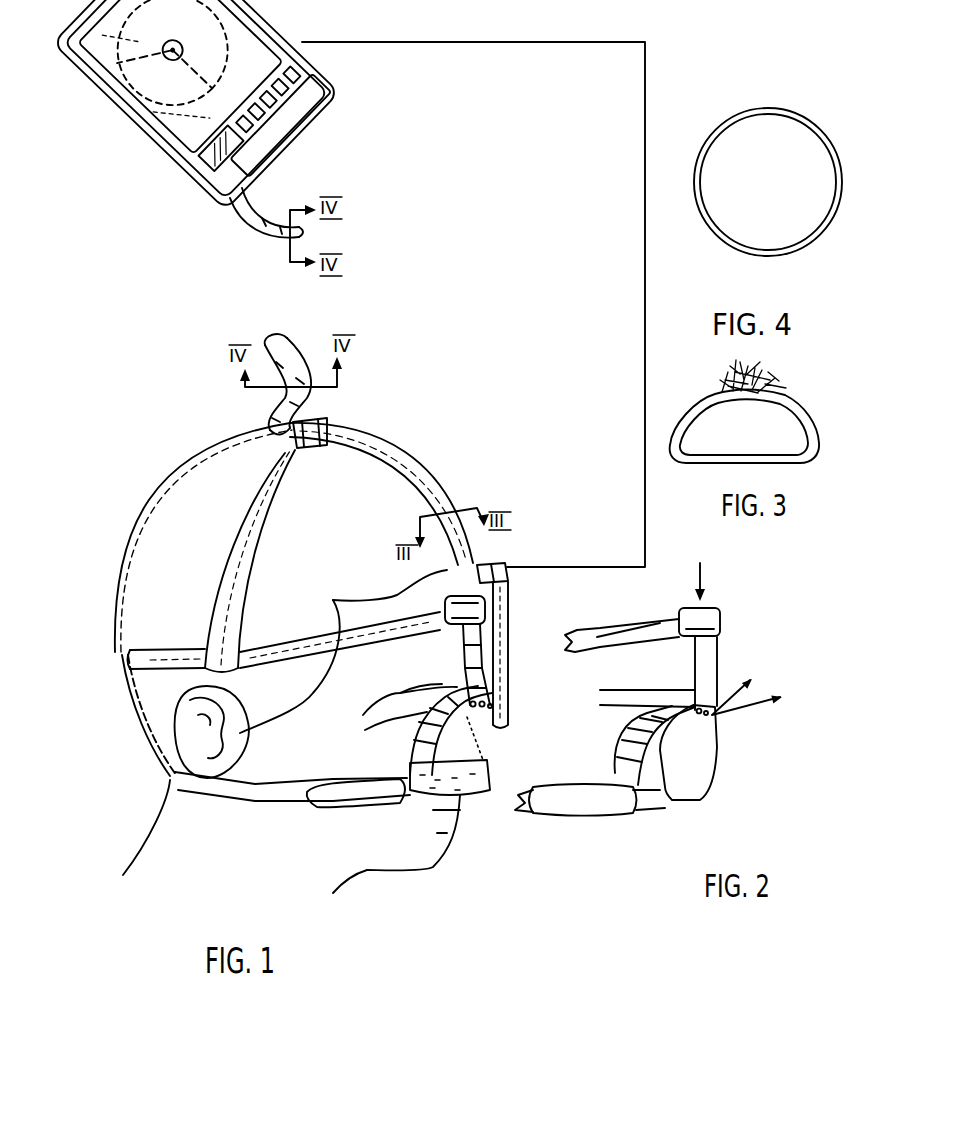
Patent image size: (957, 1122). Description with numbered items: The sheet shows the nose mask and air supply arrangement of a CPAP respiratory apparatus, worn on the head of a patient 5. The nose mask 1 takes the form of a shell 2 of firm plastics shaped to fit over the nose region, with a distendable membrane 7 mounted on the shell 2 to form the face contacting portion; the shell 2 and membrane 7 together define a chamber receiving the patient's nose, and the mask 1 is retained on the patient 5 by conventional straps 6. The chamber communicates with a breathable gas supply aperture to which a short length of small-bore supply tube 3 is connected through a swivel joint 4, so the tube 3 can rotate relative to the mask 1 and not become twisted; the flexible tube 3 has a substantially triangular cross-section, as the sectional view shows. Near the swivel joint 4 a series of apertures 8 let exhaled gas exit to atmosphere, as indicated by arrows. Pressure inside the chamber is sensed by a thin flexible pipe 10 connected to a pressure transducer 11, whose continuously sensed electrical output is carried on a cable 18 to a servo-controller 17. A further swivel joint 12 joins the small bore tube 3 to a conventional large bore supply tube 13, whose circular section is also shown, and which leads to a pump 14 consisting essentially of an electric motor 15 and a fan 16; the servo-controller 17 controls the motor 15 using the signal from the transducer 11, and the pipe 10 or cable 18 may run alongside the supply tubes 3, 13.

In FIG. 1, the nose mask 1 is at (405, 752).
In FIG. 2, the nose mask 1 is at (713, 771).
In FIG. 1, the shell 2 is at (473, 792).
In FIG. 2, the shell 2 is at (675, 792).
In FIG. 1, the supply tube 3 is at (425, 480).
In FIG. 3, the supply tube 3 is at (804, 407).
In FIG. 1, the swivel joint 4 is at (468, 672).
In FIG. 2, the swivel joint 4 is at (695, 690).
In FIG. 1, the patient 5 is at (340, 477).
In FIG. 1, the straps 6 is at (447, 625).
In FIG. 2, the straps 6 is at (673, 614).
In FIG. 1, the distendable membrane 7 is at (432, 753).
In FIG. 2, the distendable membrane 7 is at (612, 749).
In FIG. 1, the apertures 8 is at (493, 704).
In FIG. 2, the apertures 8 is at (695, 707).
In FIG. 1, the flexible pipe 10 is at (505, 598).
In FIG. 1, the pressure transducer 11 is at (495, 562).
In FIG. 1, the swivel joint 12 is at (297, 421).
In FIG. 1, the large bore supply tube 13 is at (290, 240).
In FIG. 4, the large bore supply tube 13 is at (806, 110).
In FIG. 1, the pump 14 is at (108, 98).
In FIG. 1, the electric motor 15 is at (172, 62).
In FIG. 1, the fan 16 is at (182, 60).
In FIG. 1, the servo-controller 17 is at (196, 82).
In FIG. 1, the cable 18 is at (645, 157).